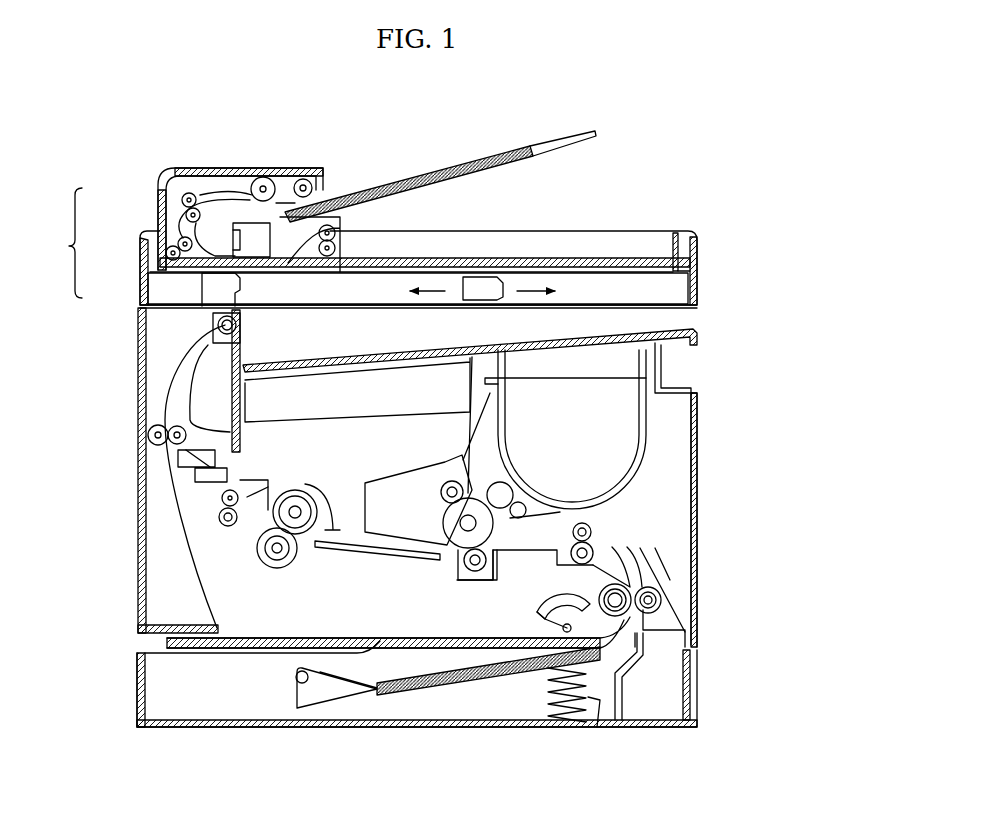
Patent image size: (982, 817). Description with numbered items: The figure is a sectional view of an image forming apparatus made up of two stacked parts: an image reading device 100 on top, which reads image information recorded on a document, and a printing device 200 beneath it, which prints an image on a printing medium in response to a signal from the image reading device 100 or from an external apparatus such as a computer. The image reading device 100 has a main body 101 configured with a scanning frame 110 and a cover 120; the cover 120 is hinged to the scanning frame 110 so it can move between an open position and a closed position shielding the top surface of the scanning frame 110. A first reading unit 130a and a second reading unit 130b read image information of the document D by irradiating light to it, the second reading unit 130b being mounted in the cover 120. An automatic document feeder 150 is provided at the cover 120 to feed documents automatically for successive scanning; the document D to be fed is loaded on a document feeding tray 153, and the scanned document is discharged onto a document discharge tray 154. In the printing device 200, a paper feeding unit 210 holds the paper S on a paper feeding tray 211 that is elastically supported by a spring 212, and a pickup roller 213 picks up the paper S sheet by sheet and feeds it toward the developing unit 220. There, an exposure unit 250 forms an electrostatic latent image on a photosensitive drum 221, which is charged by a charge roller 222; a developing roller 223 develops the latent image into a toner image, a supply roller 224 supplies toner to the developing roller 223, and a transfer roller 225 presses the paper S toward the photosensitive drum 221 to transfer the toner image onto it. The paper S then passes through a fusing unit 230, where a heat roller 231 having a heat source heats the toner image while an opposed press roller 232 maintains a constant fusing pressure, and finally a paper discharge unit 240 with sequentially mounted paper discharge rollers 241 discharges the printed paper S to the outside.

The image reading device 100 is at (708, 207).
The main body 101 is at (61, 243).
The scanning frame 110 is at (148, 290).
The cover 120 is at (158, 211).
The first reading unit 130a is at (242, 285).
The second reading unit 130b is at (242, 222).
The automatic document feeder 150 is at (243, 152).
The document feeding tray 153 is at (572, 135).
The document discharge tray 154 is at (457, 257).
The document D is at (418, 171).
The printing device 200 is at (708, 365).
The paper feeding unit 210 is at (501, 688).
The paper feeding tray 211 is at (418, 686).
The spring 212 is at (597, 705).
The pickup roller 213 is at (538, 613).
The developing unit 220 is at (652, 472).
The photosensitive drum 221 is at (443, 518).
The charge roller 222 is at (442, 483).
The developing roller 223 is at (497, 482).
The supply roller 224 is at (533, 518).
The transfer roller 225 is at (458, 572).
The fusing unit 230 is at (314, 560).
The heat roller 231 is at (300, 490).
The press roller 232 is at (277, 568).
The paper discharge unit 240 is at (158, 460).
The paper discharge rollers 241 is at (243, 321).
The exposure unit 250 is at (350, 420).
The paper S is at (418, 677).